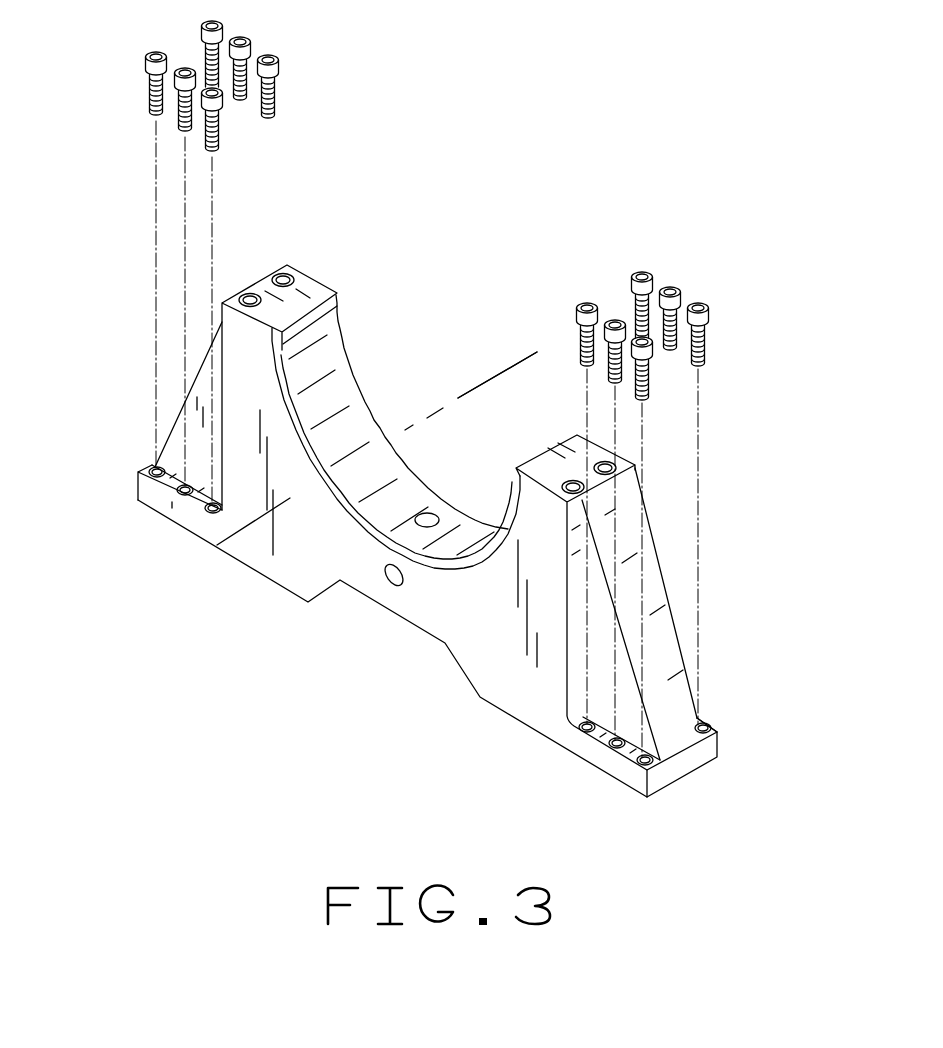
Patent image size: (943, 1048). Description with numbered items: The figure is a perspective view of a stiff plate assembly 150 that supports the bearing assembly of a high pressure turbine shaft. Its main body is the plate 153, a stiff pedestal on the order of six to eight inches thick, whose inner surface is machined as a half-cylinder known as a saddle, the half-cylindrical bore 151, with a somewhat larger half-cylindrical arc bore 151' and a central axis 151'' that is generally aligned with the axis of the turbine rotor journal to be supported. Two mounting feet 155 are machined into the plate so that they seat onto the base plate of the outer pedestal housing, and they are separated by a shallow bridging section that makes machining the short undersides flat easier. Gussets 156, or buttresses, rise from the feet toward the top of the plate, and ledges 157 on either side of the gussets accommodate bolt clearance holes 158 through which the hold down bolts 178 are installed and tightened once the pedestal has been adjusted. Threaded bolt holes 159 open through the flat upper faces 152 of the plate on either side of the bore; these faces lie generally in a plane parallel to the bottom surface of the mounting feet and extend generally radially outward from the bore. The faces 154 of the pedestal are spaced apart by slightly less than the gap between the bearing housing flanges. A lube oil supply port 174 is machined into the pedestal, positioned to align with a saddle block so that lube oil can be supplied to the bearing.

The stiff plate assembly 150 is at (507, 238).
The half-cylindrical bore 151 is at (396, 448).
The half-cylindrical arc bore 151' is at (491, 392).
The central axis 151'' is at (497, 343).
The flat upper faces 152 is at (314, 284).
The plate 153 is at (353, 360).
The faces 154 is at (290, 338).
The mounting feet 155 is at (160, 505).
The gussets 156 is at (186, 398).
The ledges 157 is at (173, 494).
The bolt clearance holes 158 is at (151, 466).
The threaded bolt holes 159 is at (251, 294).
The lube oil supply port 174 is at (427, 512).
The hold down bolts 178 is at (207, 97).